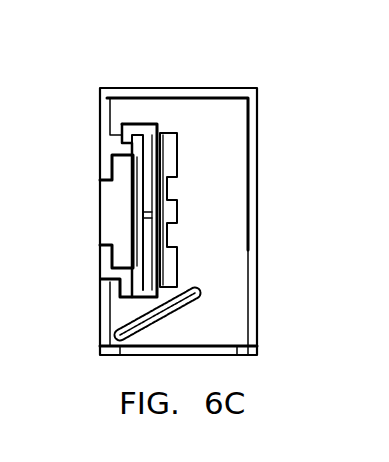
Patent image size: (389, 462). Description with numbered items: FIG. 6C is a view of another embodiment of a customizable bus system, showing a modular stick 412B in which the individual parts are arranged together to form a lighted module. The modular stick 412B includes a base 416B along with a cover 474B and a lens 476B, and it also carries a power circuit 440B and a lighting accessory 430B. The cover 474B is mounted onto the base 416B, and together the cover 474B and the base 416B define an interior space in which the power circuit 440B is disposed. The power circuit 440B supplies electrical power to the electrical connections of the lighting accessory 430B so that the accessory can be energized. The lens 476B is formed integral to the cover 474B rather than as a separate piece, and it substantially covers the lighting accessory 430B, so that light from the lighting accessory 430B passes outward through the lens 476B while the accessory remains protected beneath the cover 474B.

The modular stick 412B is at (171, 205).
The cover 474B is at (258, 120).
The lens 476B is at (146, 357).
The base 416B is at (100, 287).
The power circuit 440B is at (166, 160).
The lighting accessory 430B is at (173, 322).